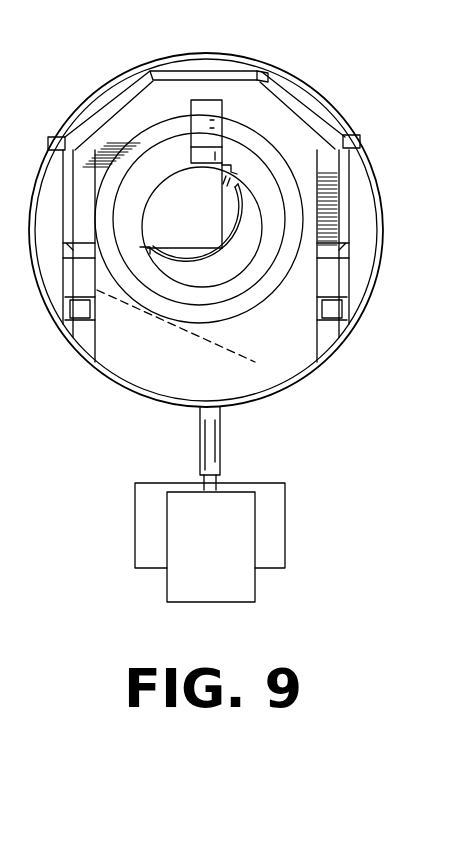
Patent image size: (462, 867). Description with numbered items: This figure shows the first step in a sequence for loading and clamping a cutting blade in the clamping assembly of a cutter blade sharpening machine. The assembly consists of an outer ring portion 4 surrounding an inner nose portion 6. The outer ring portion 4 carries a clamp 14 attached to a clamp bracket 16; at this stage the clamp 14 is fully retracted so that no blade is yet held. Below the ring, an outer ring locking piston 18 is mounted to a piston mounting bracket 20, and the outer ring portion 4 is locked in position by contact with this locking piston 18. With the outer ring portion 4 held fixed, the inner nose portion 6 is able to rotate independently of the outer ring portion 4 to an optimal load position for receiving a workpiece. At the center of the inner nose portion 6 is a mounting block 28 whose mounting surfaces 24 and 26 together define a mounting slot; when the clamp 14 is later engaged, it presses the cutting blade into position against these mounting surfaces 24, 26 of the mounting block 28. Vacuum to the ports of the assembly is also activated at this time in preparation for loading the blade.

The outer ring portion 4 is at (322, 112).
The inner nose portion 6 is at (178, 308).
The clamp 14 is at (212, 105).
The clamp bracket 16 is at (130, 117).
The outer ring locking piston 18 is at (220, 447).
The piston mounting bracket 20 is at (227, 565).
The mounting surface 24 is at (220, 216).
The mounting surface 26 is at (168, 247).
The mounting block 28 is at (220, 275).